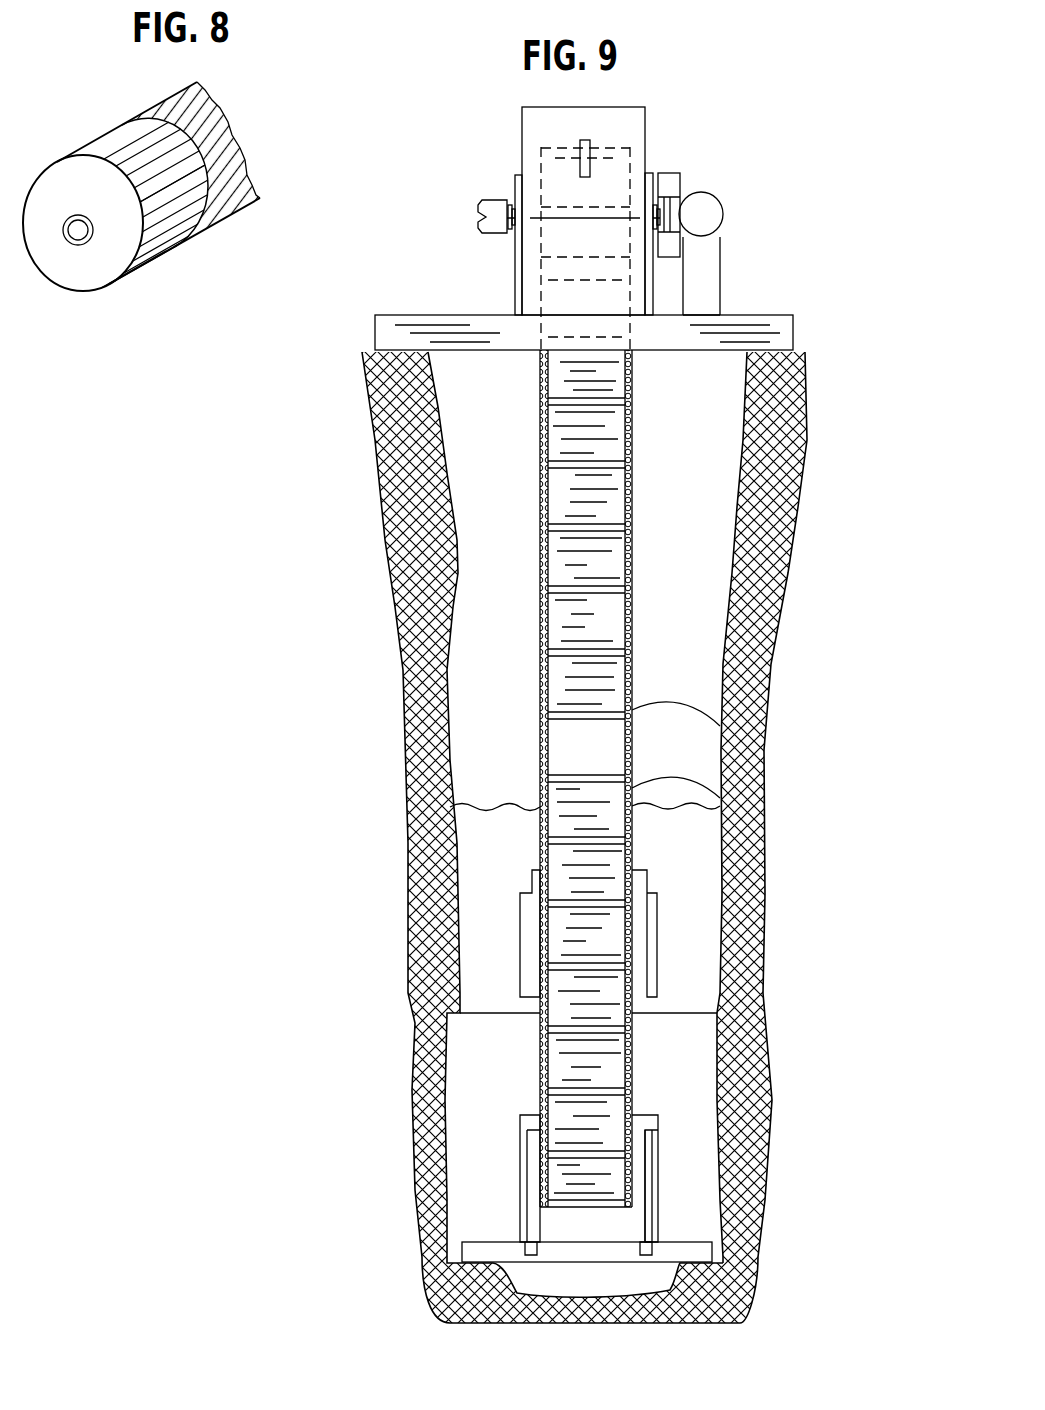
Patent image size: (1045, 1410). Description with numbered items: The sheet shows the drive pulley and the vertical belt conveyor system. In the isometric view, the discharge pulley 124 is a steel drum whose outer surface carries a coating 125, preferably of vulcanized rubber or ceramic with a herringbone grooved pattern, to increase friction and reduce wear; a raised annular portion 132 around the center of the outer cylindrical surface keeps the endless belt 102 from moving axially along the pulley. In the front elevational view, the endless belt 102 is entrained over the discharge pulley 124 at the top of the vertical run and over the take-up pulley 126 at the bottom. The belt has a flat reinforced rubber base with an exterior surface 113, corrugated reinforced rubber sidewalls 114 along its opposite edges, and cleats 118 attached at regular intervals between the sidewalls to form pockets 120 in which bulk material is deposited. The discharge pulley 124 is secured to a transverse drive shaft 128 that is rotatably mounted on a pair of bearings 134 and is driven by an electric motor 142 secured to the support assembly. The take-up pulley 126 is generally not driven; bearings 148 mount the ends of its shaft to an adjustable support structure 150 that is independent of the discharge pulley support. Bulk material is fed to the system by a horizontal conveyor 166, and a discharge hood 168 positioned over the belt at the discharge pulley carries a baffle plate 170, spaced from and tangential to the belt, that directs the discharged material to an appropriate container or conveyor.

In FIG. 8, the coating 125 is at (155, 107).
In FIG. 8, the raised annular portion 132 is at (170, 232).
In FIG. 9, the discharge hood 168 is at (630, 108).
In FIG. 9, the baffle plate 170 is at (590, 150).
In FIG. 9, the drive shaft 128 is at (523, 190).
In FIG. 9, the bearings 134 is at (523, 220).
In FIG. 9, the electric motor 142 is at (703, 212).
In FIG. 9, the discharge pulley 124 is at (637, 250).
In FIG. 9, the endless belt 102 is at (650, 528).
In FIG. 9, the exterior surface 113 is at (571, 770).
In FIG. 9, the pockets 120 is at (557, 697).
In FIG. 9, the sidewalls 114 is at (717, 735).
In FIG. 9, the cleats 118 is at (752, 818).
In FIG. 9, the horizontal conveyor 166 is at (653, 870).
In FIG. 9, the take-up pulley 126 is at (540, 1142).
In FIG. 9, the bearings 148 is at (652, 1127).
In FIG. 9, the adjustable support structure 150 is at (657, 1172).